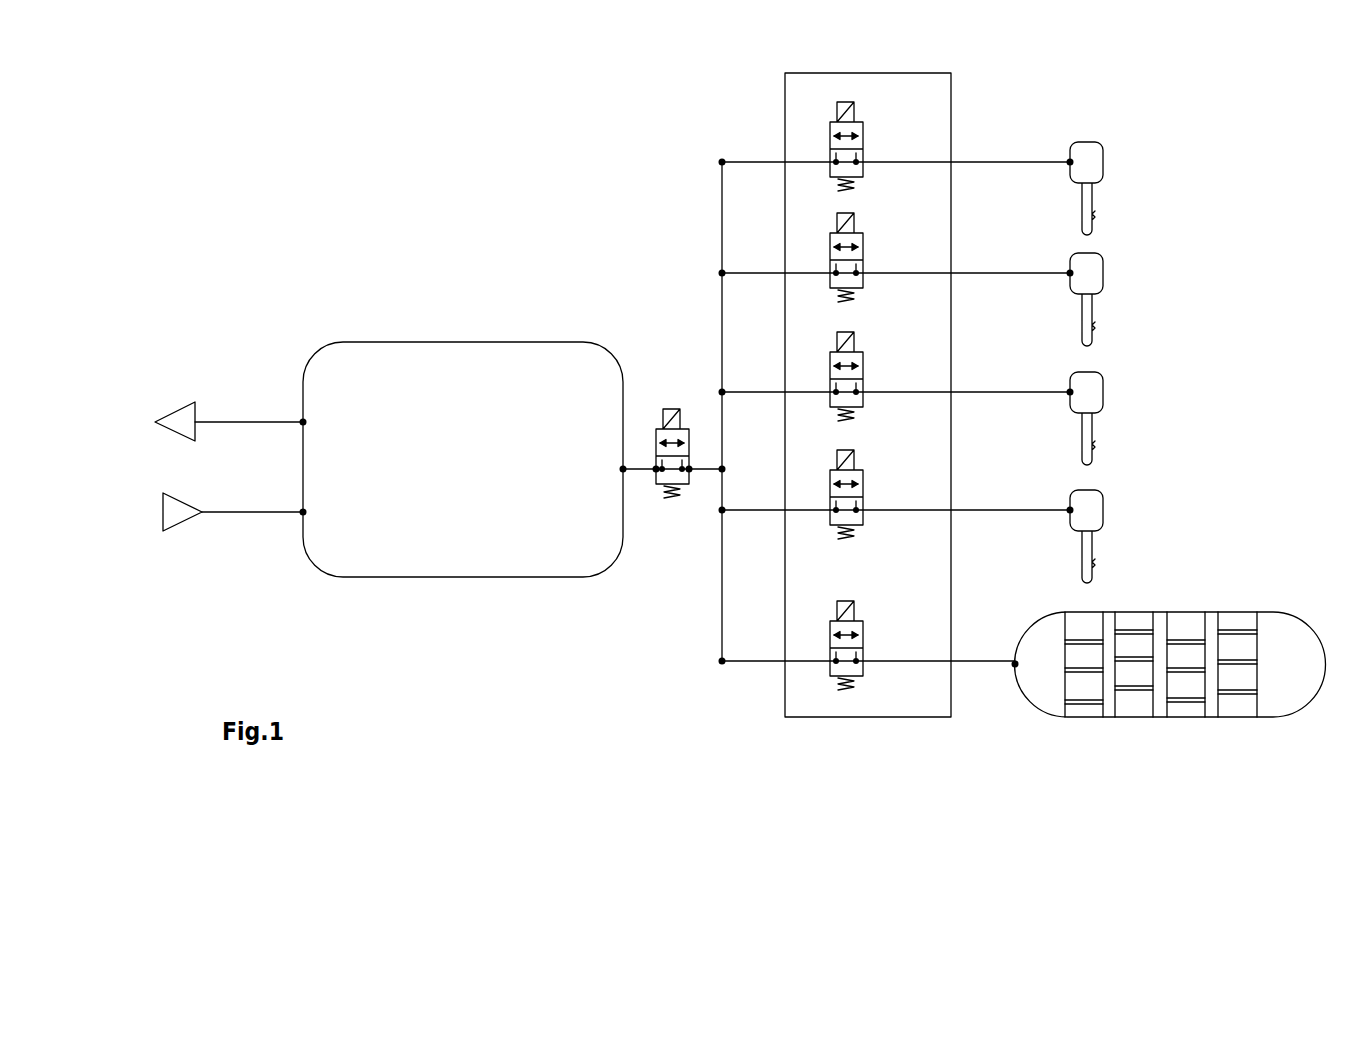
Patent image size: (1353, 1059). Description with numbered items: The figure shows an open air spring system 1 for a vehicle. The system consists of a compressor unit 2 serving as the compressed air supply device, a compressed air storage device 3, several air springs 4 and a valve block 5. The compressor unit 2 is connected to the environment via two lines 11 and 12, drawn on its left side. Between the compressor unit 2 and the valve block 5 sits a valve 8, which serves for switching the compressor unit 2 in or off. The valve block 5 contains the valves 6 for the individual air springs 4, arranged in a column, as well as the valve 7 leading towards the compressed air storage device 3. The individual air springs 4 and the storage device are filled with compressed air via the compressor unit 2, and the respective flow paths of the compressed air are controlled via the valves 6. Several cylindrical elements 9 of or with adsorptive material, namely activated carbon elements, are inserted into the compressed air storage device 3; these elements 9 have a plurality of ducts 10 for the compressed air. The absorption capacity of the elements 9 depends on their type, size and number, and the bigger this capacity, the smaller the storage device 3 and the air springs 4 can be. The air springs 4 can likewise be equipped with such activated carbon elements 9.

The air spring system 1 is at (720, 113).
The compressor unit 2 is at (340, 548).
The compressed air storage device 3 is at (1267, 612).
The air springs 4 is at (1090, 163).
The valve block 5 is at (910, 90).
The valves 6 is at (830, 147).
The valve 7 is at (863, 675).
The valve 8 is at (675, 495).
The cylindrical elements 9 is at (1080, 688).
The ducts 10 is at (1122, 628).
The line 11 is at (240, 513).
The line 12 is at (238, 420).